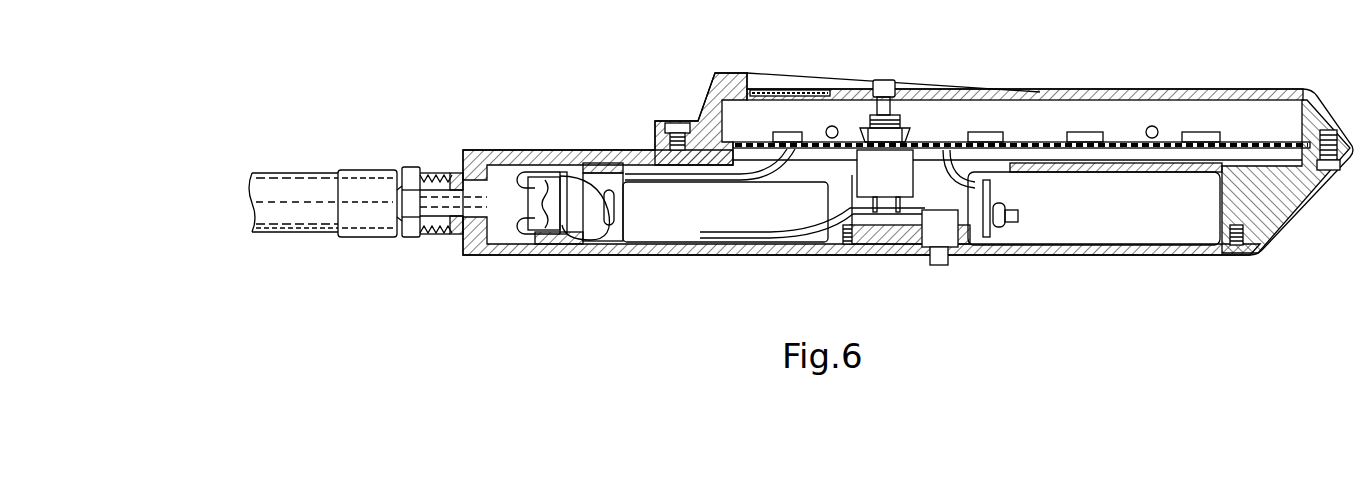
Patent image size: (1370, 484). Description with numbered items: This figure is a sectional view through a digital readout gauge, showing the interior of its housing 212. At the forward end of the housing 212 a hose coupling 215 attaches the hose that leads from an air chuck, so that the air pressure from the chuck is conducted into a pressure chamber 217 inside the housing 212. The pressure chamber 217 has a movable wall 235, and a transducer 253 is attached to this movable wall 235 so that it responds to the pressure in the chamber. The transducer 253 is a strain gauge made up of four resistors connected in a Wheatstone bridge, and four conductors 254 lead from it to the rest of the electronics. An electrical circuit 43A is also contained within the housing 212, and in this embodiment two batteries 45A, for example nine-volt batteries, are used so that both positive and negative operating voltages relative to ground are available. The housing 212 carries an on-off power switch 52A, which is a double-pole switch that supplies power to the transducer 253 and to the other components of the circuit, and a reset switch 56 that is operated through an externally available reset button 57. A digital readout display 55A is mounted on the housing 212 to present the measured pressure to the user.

The housing 212 is at (622, 150).
The hose coupling 215 is at (437, 238).
The pressure chamber 217 is at (548, 170).
The movable wall 235 is at (538, 244).
The transducer 253 is at (568, 172).
The conductors 254 is at (640, 244).
The electrical circuit 43A is at (1172, 142).
The batteries 45A is at (728, 242).
The power switch 52A is at (922, 236).
The digital readout display 55A is at (777, 90).
The reset switch 56 is at (905, 158).
The reset button 57 is at (882, 80).